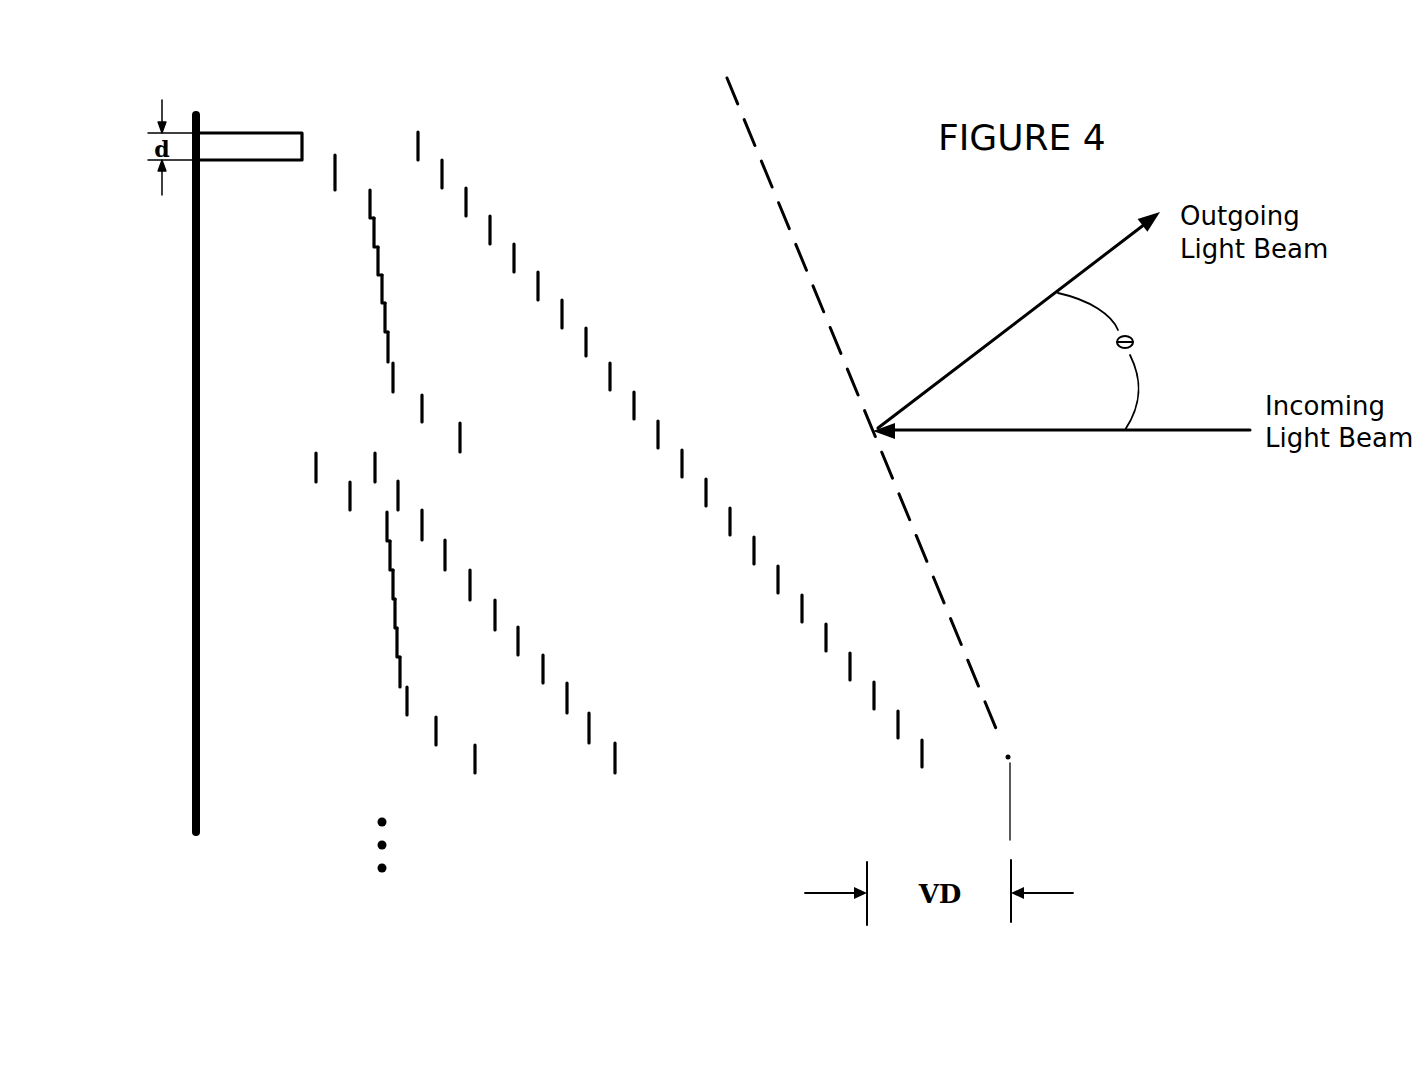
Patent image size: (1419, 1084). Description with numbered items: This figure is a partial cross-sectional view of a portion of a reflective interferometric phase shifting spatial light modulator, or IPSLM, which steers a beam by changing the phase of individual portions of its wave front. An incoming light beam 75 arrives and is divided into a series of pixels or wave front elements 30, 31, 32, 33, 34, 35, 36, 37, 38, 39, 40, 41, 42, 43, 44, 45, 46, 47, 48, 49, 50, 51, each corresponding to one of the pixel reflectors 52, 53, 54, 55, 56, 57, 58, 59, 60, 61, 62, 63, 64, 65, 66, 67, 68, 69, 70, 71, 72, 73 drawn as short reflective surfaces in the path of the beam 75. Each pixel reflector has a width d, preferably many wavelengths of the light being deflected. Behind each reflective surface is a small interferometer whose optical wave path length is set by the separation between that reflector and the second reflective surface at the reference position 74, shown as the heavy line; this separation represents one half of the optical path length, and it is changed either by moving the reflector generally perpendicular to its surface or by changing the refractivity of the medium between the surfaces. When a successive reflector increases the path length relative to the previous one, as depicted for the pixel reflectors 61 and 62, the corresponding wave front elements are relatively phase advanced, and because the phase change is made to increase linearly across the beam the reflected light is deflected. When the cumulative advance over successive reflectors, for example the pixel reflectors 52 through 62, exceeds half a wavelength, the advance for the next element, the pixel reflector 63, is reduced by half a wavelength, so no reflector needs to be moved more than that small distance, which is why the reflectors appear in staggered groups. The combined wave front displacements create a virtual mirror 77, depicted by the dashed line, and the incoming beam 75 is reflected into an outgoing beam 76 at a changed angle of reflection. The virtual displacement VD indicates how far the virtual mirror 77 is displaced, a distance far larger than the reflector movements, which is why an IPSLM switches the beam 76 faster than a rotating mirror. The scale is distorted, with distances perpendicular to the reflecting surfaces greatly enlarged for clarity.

The wave front element 30 is at (418, 134).
The wave front element 31 is at (442, 162).
The wave front element 32 is at (466, 190).
The wave front element 33 is at (490, 218).
The wave front element 34 is at (514, 246).
The wave front element 35 is at (538, 274).
The wave front element 36 is at (562, 302).
The wave front element 37 is at (586, 330).
The wave front element 38 is at (610, 388).
The wave front element 39 is at (634, 417).
The wave front element 40 is at (658, 446).
The wave front element 41 is at (682, 475).
The wave front element 42 is at (706, 504).
The wave front element 43 is at (730, 533).
The wave front element 44 is at (754, 562).
The wave front element 45 is at (778, 591).
The wave front element 46 is at (802, 620).
The wave front element 47 is at (826, 649).
The wave front element 48 is at (850, 678).
The wave front element 49 is at (874, 707).
The wave front element 50 is at (898, 736).
The wave front element 51 is at (922, 765).
The pixel reflector 52 is at (302, 133).
The pixel reflector 53 is at (335, 190).
The pixel reflector 54 is at (370, 198).
The pixel reflector 55 is at (374, 240).
The pixel reflector 56 is at (378, 270).
The pixel reflector 57 is at (382, 300).
The pixel reflector 58 is at (385, 333).
The pixel reflector 59 is at (388, 362).
The pixel reflector 60 is at (393, 366).
The pixel reflector 61 is at (422, 397).
The pixel reflector 62 is at (460, 425).
The pixel reflector 63 is at (316, 455).
The pixel reflector 64 is at (350, 510).
The pixel reflector 65 is at (387, 520).
The pixel reflector 66 is at (390, 562).
The pixel reflector 67 is at (393, 592).
The pixel reflector 68 is at (395, 622).
The pixel reflector 69 is at (397, 655).
The pixel reflector 70 is at (400, 686).
The pixel reflector 71 is at (407, 690).
The pixel reflector 72 is at (436, 718).
The pixel reflector 73 is at (475, 747).
The reference position 74 is at (196, 115).
The incoming light beam 75 is at (942, 428).
The outgoing light beam 76 is at (978, 352).
The virtual mirror 77 is at (925, 542).